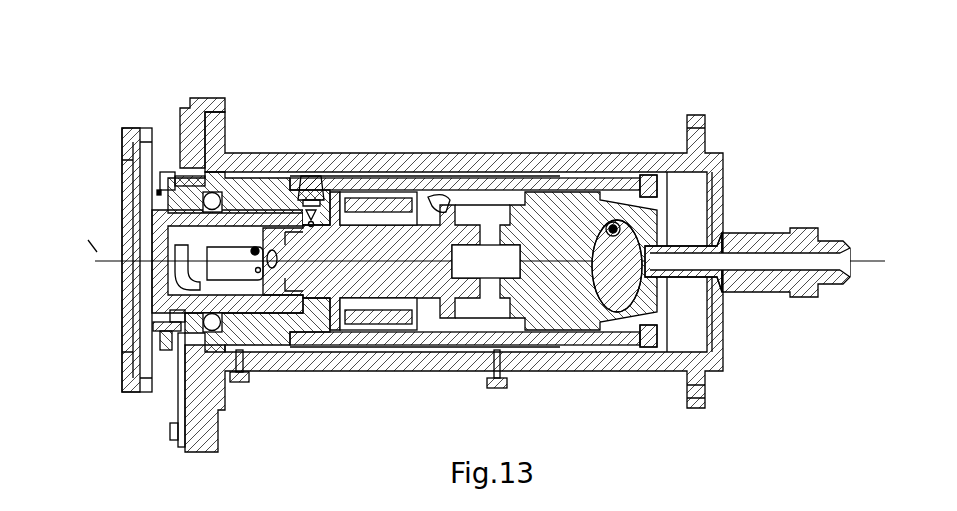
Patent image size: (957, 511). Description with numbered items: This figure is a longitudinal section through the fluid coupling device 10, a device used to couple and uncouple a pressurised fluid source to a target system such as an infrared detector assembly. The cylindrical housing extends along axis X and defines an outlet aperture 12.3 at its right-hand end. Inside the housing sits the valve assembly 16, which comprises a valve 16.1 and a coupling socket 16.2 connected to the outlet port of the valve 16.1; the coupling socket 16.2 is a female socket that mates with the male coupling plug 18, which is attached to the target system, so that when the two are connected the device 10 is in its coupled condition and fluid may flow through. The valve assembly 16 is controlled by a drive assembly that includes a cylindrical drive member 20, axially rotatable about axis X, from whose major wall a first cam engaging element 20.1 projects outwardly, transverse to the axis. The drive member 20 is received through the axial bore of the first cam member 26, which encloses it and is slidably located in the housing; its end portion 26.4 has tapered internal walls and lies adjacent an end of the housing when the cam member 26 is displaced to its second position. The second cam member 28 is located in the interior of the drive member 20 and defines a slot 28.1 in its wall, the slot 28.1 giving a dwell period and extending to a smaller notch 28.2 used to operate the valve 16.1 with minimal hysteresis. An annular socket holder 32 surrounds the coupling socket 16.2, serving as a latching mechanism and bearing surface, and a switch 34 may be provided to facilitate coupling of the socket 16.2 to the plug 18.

The fluid coupling device 10 is at (124, 74).
The outlet aperture 12.3 is at (731, 225).
The valve assembly 16 is at (452, 195).
The valve 16.1 is at (420, 258).
The coupling socket 16.2 is at (584, 226).
The male coupling plug 18 is at (803, 232).
The cylindrical drive member 20 is at (257, 205).
The first cam engaging element 20.1 is at (309, 195).
The first cam member 26 is at (532, 180).
The end portion of the first cam member 26.4 is at (680, 203).
The second cam member 28 is at (170, 237).
The slot 28.1 is at (237, 276).
The notch 28.2 is at (174, 287).
The socket holder 32 is at (553, 320).
The switch 34 is at (600, 284).